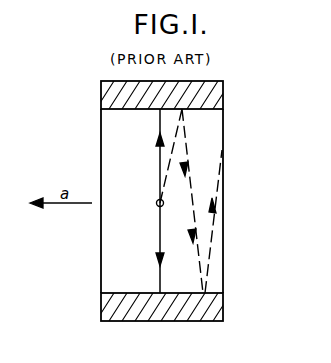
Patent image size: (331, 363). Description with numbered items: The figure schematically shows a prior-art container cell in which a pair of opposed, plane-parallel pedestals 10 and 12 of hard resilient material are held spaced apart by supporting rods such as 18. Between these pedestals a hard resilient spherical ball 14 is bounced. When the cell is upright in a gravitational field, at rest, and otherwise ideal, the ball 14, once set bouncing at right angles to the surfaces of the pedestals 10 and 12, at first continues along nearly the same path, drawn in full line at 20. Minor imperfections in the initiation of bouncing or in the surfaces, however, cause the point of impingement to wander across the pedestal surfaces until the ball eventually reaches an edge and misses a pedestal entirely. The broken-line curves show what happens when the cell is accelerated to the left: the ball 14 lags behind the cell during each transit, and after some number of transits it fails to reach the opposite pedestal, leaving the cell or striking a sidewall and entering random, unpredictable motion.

The pedestal 10 is at (223, 100).
The pedestal 12 is at (223, 315).
The supporting rod 18 is at (100, 142).
The spherical ball 14 is at (156, 203).
The bouncing path 20 is at (158, 240).